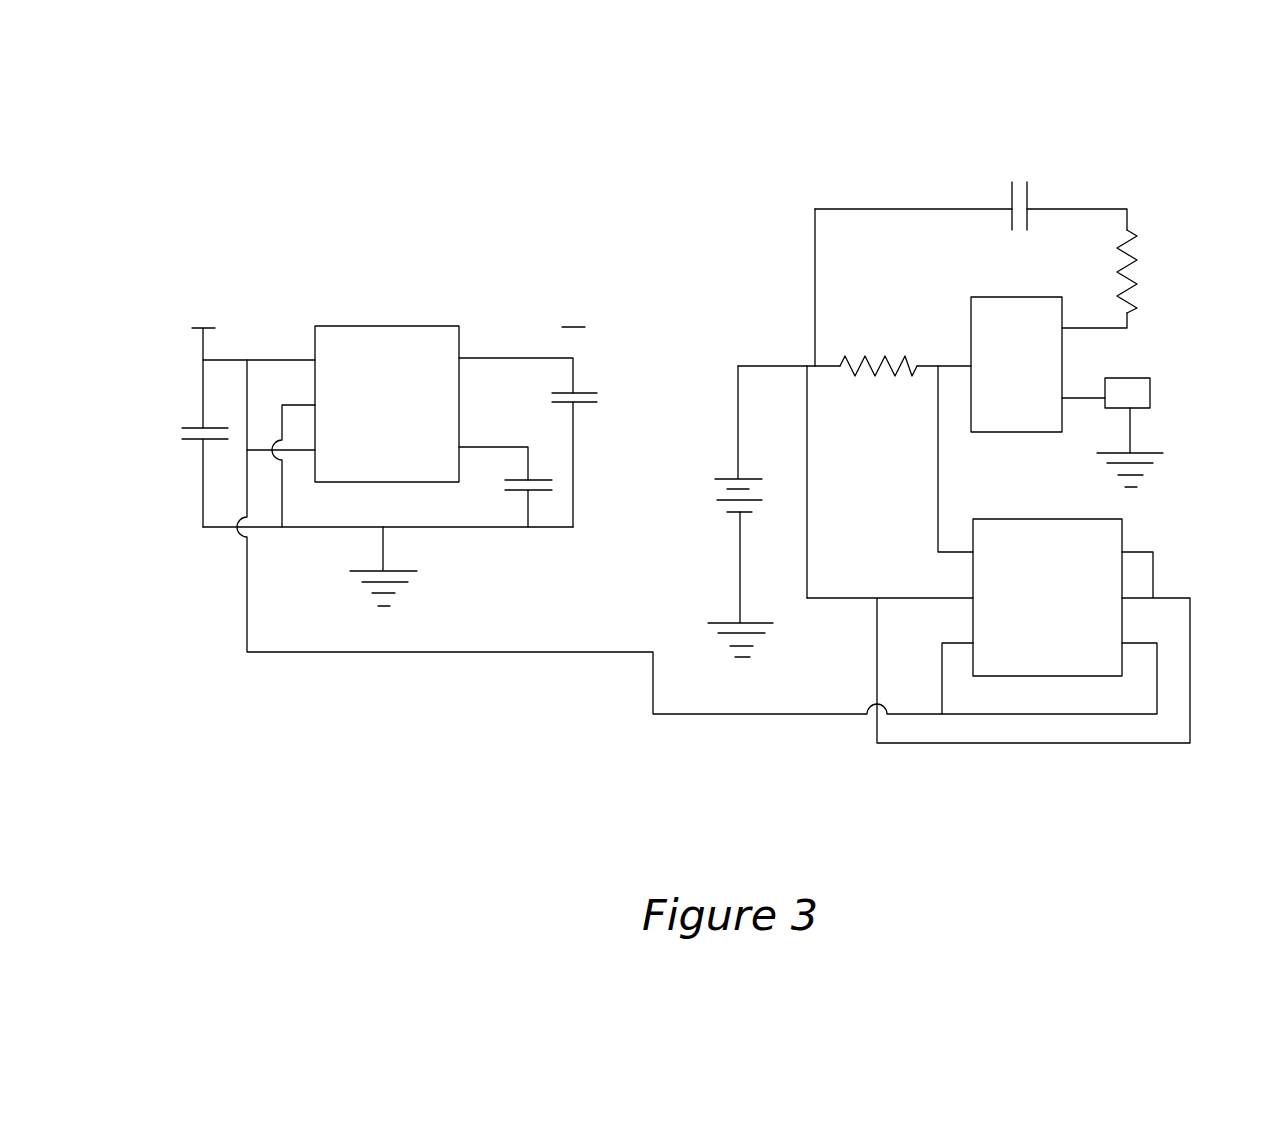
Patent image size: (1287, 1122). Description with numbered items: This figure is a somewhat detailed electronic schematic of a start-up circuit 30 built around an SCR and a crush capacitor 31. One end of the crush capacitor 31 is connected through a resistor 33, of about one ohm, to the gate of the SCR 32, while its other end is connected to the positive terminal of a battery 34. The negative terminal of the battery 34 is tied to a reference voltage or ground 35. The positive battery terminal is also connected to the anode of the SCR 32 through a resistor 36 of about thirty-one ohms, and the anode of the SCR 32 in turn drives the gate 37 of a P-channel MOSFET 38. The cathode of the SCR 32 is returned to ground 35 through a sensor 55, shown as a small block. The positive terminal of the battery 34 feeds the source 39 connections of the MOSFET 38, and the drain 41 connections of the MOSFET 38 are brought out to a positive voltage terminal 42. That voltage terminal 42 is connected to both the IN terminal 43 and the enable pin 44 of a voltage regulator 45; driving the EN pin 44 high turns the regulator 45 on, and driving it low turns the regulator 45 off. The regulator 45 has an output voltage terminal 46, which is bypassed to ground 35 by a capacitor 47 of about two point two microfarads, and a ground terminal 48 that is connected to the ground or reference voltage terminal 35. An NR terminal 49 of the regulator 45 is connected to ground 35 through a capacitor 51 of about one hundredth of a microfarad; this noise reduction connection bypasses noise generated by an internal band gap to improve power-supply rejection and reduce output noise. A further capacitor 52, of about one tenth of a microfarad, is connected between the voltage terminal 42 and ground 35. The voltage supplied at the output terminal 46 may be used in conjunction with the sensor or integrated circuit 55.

The circuit 30 is at (1115, 118).
The crush capacitor 31 is at (1028, 195).
The SCR 32 is at (1017, 296).
The resistor 33 is at (1140, 253).
The battery 34 is at (727, 477).
The ground 35 is at (400, 588).
The resistor 36 is at (872, 362).
The gate 37 is at (960, 550).
The P-channel MOSFET 38 is at (1107, 527).
The source connections 39 is at (957, 596).
The drain connections 41 is at (957, 642).
The positive voltage terminal 42 is at (203, 326).
The IN terminal 43 is at (298, 359).
The enable (EN) pin 44 is at (295, 451).
The voltage regulator 45 is at (387, 325).
The output voltage terminal 46 is at (578, 326).
The capacitor 47 is at (588, 391).
The ground terminal 48 is at (300, 404).
The NR terminal 49 is at (472, 446).
The capacitor 51 is at (533, 491).
The capacitor 52 is at (195, 427).
The sensor 55 is at (1150, 393).